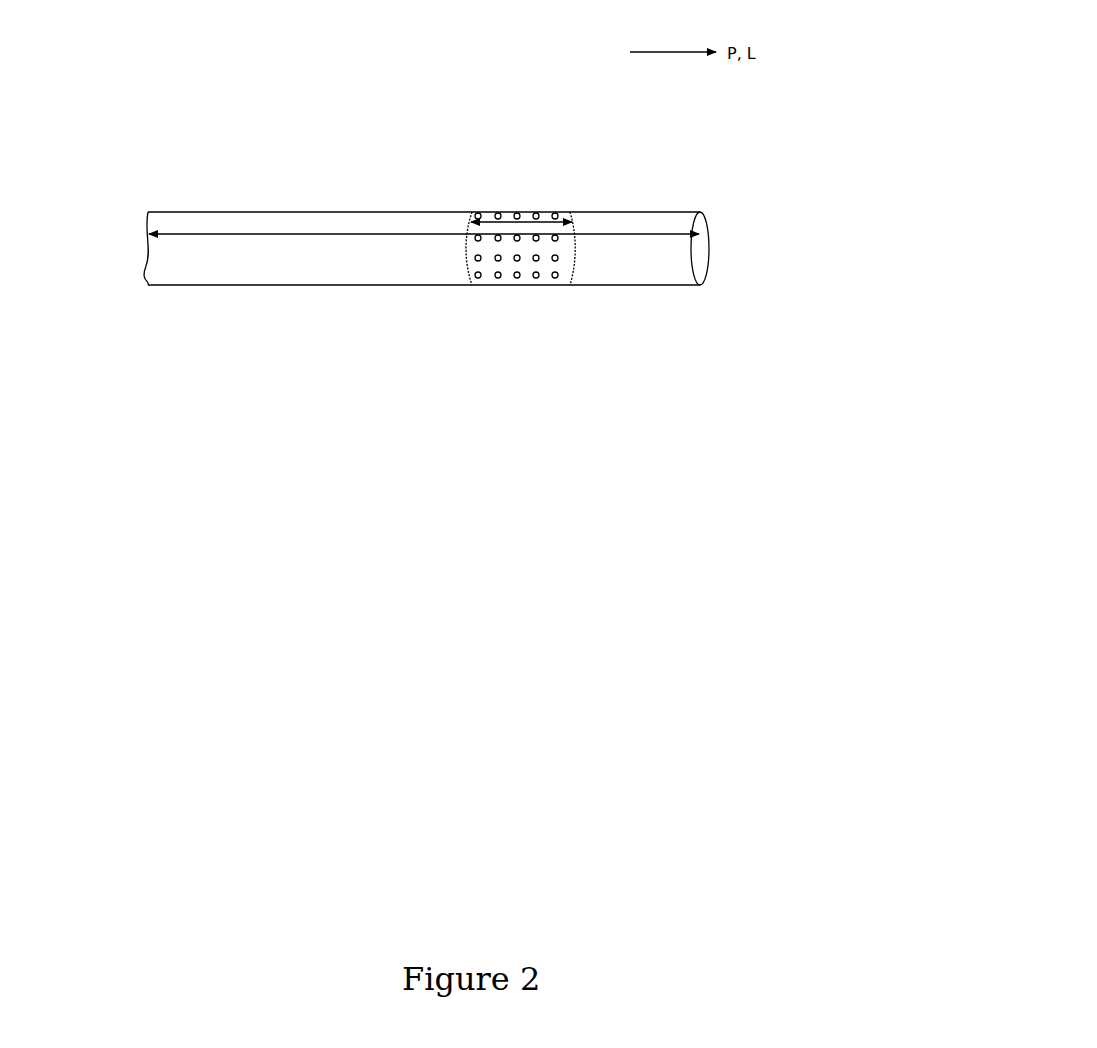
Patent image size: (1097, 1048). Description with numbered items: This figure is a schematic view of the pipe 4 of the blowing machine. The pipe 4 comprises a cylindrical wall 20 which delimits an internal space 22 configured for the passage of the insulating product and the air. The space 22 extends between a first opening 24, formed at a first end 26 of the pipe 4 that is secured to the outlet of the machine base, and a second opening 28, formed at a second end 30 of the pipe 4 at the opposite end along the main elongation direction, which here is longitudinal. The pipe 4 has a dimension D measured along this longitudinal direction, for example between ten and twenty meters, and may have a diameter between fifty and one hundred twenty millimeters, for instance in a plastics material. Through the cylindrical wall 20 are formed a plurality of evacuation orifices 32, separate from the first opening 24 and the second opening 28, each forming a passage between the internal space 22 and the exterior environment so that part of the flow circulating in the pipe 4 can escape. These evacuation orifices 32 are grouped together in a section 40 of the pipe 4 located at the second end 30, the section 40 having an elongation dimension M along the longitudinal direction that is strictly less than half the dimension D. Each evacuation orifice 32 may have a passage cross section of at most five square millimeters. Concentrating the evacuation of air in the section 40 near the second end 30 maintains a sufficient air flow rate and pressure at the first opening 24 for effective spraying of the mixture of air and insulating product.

The pipe 4 is at (187, 115).
The cylindrical wall 20 is at (330, 212).
The space 22 is at (762, 247).
The first opening 24 is at (100, 283).
The first end 26 is at (147, 280).
The second opening 28 is at (762, 247).
The second end 30 is at (698, 247).
The evacuation orifice 32 is at (479, 262).
The section 40 is at (569, 212).